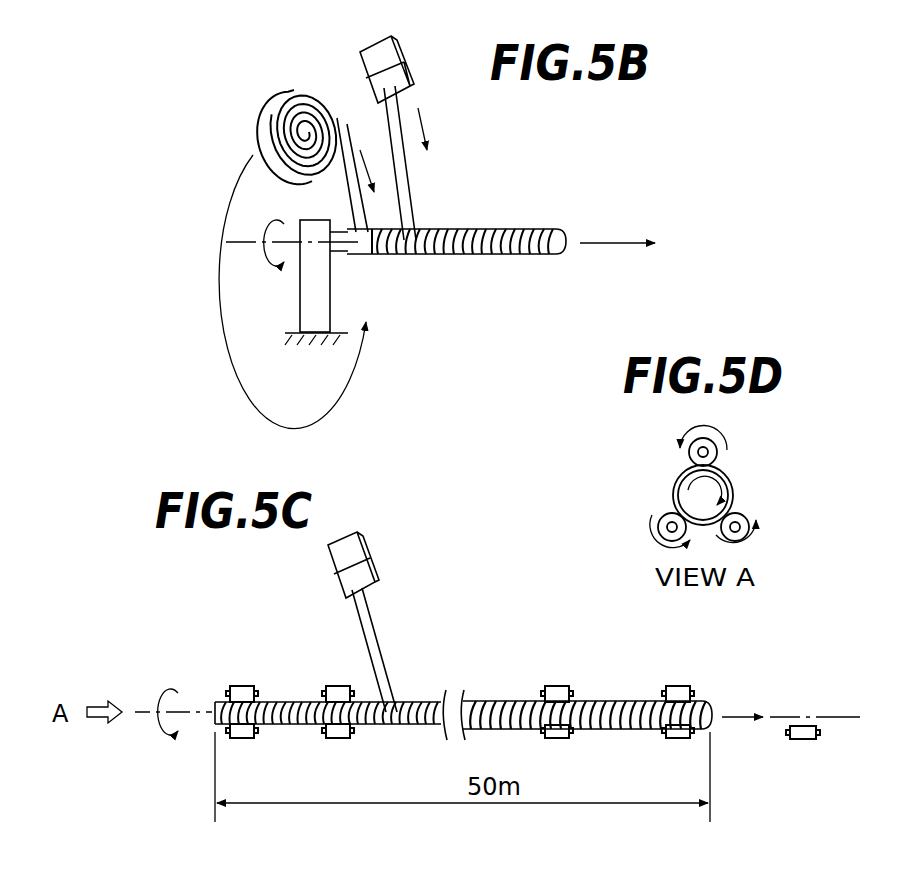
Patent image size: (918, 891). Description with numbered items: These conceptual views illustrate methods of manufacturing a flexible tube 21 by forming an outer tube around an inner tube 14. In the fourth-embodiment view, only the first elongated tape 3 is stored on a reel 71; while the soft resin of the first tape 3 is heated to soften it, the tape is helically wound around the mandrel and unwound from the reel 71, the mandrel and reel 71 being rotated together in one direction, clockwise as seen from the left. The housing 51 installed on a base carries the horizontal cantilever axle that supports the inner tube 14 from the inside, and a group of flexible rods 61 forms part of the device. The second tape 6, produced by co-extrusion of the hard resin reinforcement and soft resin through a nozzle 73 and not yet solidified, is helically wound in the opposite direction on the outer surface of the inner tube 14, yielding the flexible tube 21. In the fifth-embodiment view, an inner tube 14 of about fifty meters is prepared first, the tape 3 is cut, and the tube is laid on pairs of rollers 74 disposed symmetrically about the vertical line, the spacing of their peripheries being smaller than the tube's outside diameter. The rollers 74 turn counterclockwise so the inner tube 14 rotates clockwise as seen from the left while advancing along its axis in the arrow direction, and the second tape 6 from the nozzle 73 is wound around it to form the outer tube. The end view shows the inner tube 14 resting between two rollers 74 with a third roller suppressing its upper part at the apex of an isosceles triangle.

In FIG. 5B, the first tape 3 is at (346, 188).
In FIG. 5B, the second tape 6 is at (416, 181).
In FIG. 5C, the inner tube 14 is at (292, 700).
In FIG. 5C, the flexible tube 21 is at (620, 702).
In FIG. 5B, the housing 51 is at (312, 220).
In FIG. 5B, the flexible rods group 61 is at (344, 259).
In FIG. 5B, the reel 71 is at (259, 108).
In FIG. 5B, the nozzle 73 is at (412, 67).
In FIG. 5C, the nozzle 73 is at (376, 572).
In FIG. 5C, the rollers 74 is at (244, 740).
In FIG. 5D, the rollers 74 is at (667, 512).